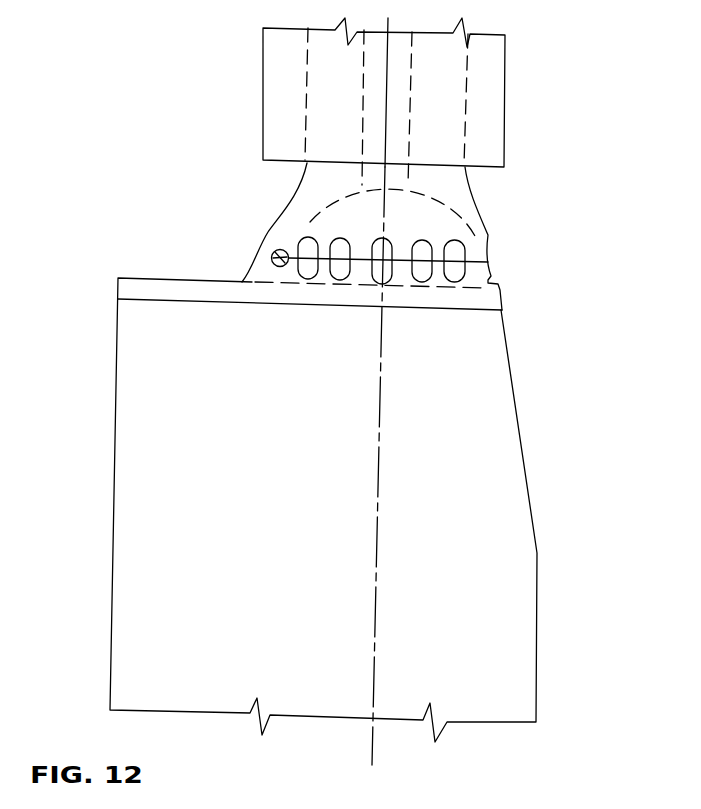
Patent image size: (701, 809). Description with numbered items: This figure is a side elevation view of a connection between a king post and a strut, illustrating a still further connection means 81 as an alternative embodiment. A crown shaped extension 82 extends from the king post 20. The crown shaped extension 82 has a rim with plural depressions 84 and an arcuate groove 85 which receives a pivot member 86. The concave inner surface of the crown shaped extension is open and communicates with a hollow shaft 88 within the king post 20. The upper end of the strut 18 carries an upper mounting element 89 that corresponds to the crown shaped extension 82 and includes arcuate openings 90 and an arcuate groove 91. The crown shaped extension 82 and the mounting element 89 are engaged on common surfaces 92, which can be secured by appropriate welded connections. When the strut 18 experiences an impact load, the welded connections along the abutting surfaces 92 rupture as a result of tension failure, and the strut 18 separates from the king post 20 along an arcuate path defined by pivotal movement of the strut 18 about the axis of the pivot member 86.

The strut 18 is at (498, 402).
The king post 20 is at (447, 192).
The connection means 81 is at (186, 218).
The crown shaped extension 82 is at (471, 239).
The depressions 84 is at (307, 237).
The arcuate groove 85 is at (281, 249).
The pivot member 86 is at (271, 255).
The hollow shaft 88 is at (413, 80).
The upper mounting element 89 is at (480, 277).
The arcuate openings 90 is at (384, 278).
The arcuate groove 91 is at (279, 267).
The common surfaces 92 is at (362, 262).